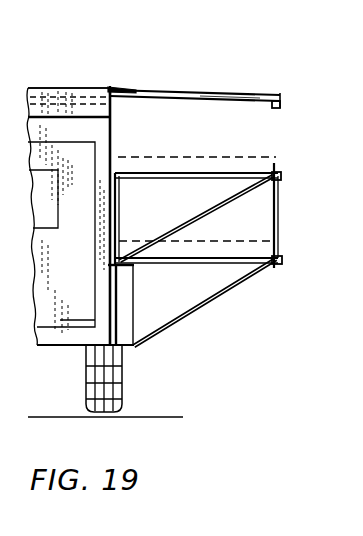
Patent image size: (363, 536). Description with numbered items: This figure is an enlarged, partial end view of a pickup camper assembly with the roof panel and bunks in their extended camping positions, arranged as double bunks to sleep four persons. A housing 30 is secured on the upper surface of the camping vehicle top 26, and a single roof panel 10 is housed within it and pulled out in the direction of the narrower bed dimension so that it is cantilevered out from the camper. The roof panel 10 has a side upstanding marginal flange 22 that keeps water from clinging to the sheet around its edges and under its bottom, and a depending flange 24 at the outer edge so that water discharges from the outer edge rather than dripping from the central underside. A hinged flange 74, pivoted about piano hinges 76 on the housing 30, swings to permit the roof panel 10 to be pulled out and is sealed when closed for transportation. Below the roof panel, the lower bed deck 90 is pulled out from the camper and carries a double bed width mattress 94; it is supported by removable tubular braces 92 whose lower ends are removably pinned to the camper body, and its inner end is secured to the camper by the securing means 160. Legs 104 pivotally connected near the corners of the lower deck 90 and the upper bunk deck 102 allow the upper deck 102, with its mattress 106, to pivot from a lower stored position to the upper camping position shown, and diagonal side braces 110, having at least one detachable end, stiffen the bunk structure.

The roof panel 10 is at (247, 100).
The side upstanding marginal flange 22 is at (218, 97).
The depending flange 24 is at (280, 107).
The camping vehicle top 26 is at (68, 116).
The housing 30 is at (97, 87).
The hinged flange 74 is at (128, 88).
The piano hinge 76 is at (112, 86).
The lower bed deck 90 is at (178, 264).
The tubular brace 92 is at (200, 306).
The mattress 94 is at (250, 238).
The upper bunk deck 102 is at (168, 183).
The leg 104 is at (276, 207).
The upper mattress 106 is at (248, 157).
The diagonal side brace 110 is at (222, 206).
The securing means 160 is at (112, 266).